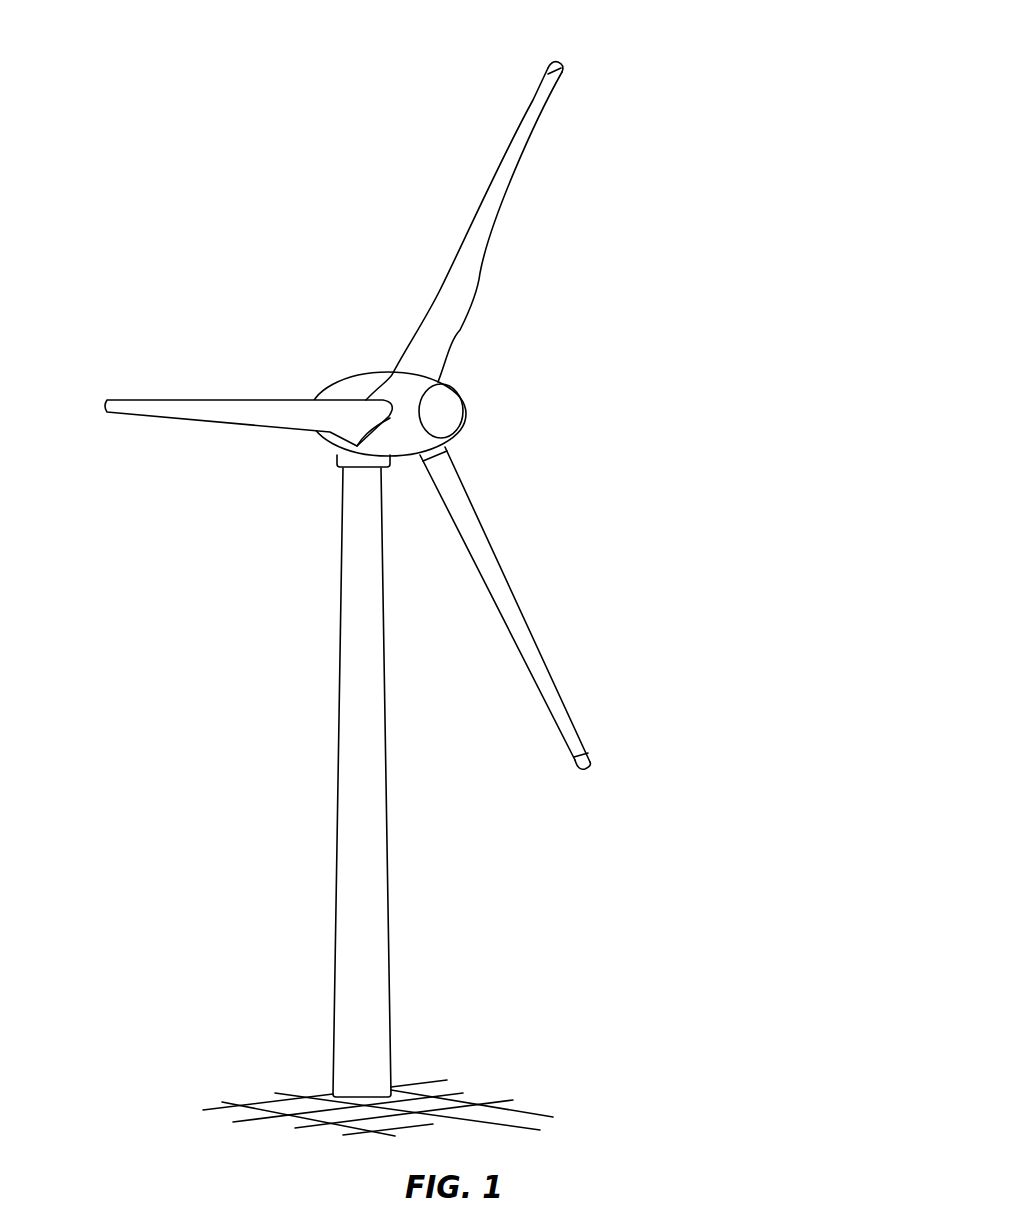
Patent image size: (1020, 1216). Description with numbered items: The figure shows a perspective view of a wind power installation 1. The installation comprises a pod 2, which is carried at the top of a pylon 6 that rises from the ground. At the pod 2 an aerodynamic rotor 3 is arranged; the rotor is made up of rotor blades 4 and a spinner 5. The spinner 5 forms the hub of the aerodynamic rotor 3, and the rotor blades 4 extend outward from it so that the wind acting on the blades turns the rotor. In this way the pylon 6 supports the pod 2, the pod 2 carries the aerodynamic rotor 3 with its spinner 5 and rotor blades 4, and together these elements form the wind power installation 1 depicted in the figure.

The wind power installation 1 is at (299, 521).
The pod 2 is at (356, 388).
The aerodynamic rotor 3 is at (573, 103).
The rotor blades 4 is at (517, 620).
The spinner 5 is at (470, 392).
The pylon 6 is at (370, 878).